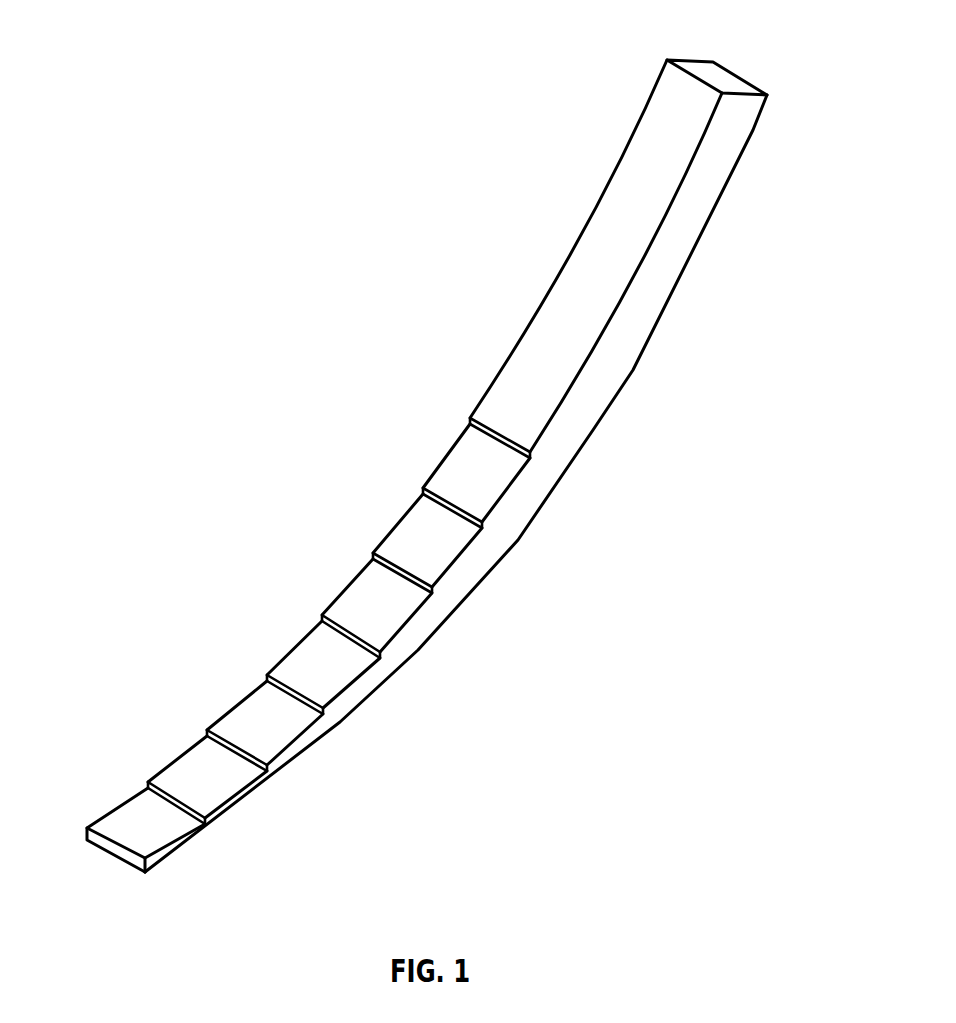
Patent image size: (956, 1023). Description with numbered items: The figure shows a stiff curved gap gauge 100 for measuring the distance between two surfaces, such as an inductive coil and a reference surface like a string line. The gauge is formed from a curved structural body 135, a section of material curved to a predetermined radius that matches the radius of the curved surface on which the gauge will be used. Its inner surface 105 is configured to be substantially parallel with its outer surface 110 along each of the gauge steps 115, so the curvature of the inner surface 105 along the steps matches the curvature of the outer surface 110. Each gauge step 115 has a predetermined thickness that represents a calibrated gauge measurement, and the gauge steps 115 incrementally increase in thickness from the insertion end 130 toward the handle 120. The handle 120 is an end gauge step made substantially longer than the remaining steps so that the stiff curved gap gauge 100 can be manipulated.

The stiff curved gap gauge 100 is at (256, 203).
The inner surface 105 is at (378, 459).
The outer surface 110 is at (752, 142).
The gauge steps 115 is at (572, 388).
The handle 120 is at (643, 180).
The insertion end 130 is at (115, 862).
The curved structural body 135 is at (718, 78).